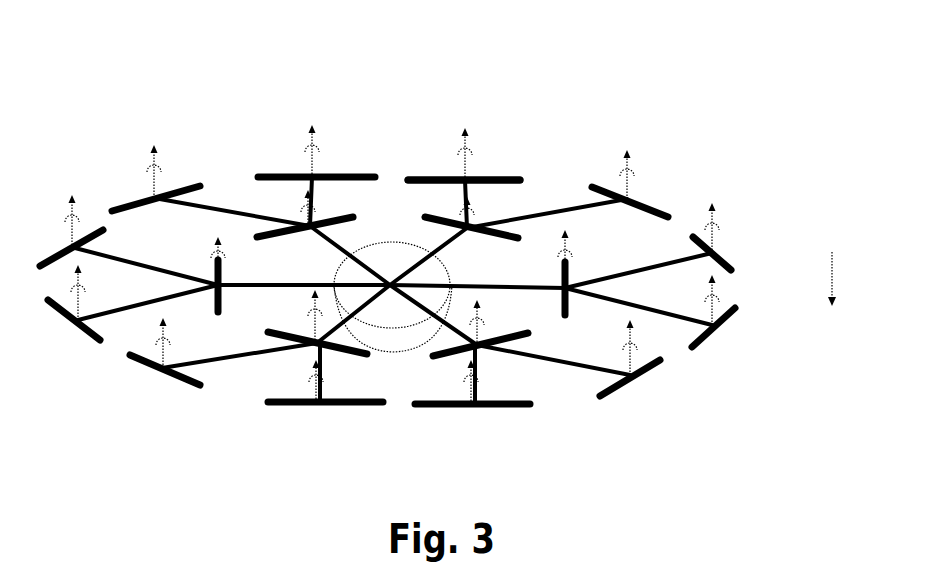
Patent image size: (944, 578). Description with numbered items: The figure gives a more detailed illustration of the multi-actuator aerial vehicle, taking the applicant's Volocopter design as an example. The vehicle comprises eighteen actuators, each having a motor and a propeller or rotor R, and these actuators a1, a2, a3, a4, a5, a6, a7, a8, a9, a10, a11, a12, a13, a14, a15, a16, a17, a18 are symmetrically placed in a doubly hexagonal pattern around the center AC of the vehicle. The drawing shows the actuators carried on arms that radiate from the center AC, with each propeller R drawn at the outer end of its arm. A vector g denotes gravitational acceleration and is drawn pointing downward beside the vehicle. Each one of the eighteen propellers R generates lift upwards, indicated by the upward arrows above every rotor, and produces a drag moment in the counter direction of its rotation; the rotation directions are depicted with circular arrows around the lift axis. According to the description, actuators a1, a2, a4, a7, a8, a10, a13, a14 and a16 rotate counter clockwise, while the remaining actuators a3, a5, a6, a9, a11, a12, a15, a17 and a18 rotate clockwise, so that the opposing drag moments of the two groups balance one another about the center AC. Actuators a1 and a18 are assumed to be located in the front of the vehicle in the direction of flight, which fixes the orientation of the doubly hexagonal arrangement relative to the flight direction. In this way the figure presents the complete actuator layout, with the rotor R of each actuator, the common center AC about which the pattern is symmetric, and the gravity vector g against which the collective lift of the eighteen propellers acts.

The center of the MAV AC is at (388, 283).
The propeller R is at (504, 178).
The gravitational acceleration vector g is at (846, 279).
The actuator a1 is at (464, 154).
The actuator a2 is at (456, 217).
The actuator a3 is at (630, 183).
The actuator a4 is at (721, 236).
The actuator a5 is at (578, 272).
The actuator a6 is at (720, 316).
The actuator a7 is at (630, 362).
The actuator a8 is at (480, 328).
The actuator a9 is at (472, 395).
The actuator a10 is at (325, 395).
The actuator a11 is at (317, 322).
The actuator a12 is at (165, 355).
The actuator a13 is at (87, 302).
The actuator a14 is at (232, 274).
The actuator a15 is at (71, 230).
The actuator a16 is at (156, 178).
The actuator a17 is at (305, 213).
The actuator a18 is at (315, 151).